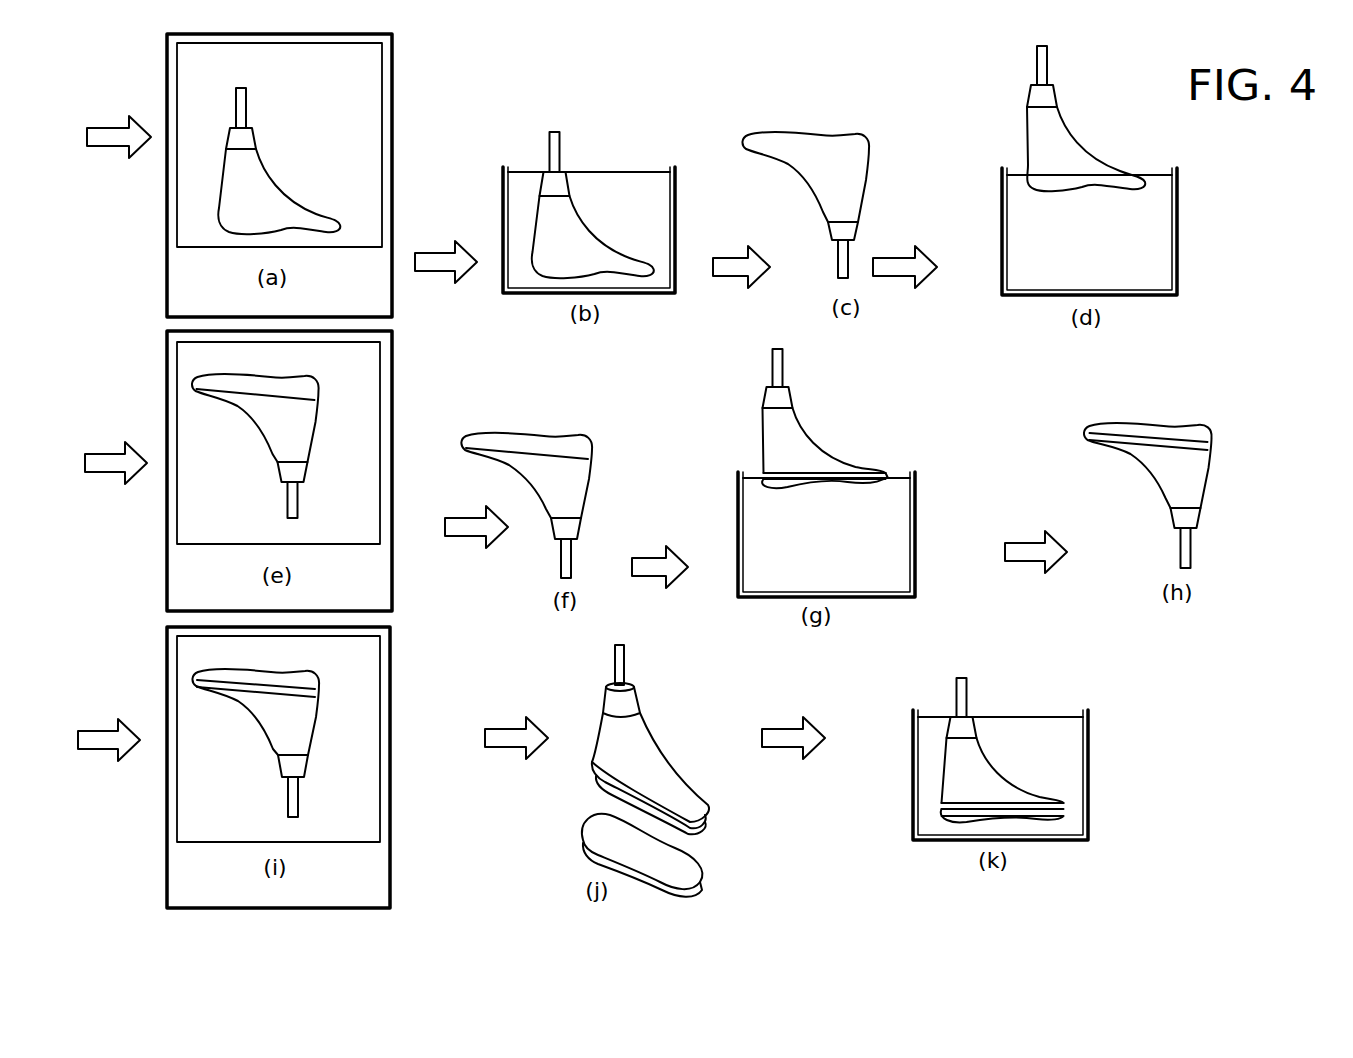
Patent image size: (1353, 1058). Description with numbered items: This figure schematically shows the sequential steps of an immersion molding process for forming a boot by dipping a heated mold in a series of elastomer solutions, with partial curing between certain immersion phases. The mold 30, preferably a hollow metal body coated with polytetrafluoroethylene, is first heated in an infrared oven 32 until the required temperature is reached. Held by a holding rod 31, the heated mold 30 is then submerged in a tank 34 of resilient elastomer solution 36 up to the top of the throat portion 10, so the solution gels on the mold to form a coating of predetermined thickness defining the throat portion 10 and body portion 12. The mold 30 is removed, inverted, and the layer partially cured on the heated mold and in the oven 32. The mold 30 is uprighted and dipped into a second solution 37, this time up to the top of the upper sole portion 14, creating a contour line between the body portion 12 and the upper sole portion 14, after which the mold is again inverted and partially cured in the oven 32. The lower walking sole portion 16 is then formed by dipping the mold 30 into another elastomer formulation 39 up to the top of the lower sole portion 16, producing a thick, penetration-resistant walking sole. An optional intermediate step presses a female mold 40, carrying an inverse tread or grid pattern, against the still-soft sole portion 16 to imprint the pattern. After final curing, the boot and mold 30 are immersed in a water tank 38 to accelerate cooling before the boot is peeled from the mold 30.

The throat portion 10 is at (546, 186).
The body portion 12 is at (853, 173).
The upper sole portion 14 is at (310, 392).
The lower sole portion 16 is at (778, 484).
The mold 30 is at (228, 200).
The holding rod 31 is at (238, 102).
The infrared oven 32 is at (372, 70).
The tank 34 is at (672, 213).
The resilient elastomer solution 36 is at (624, 180).
The second solution 37 is at (1155, 248).
The water tank 38 is at (1086, 746).
The elastomer formulation 39 is at (895, 525).
The female mold 40 is at (678, 868).